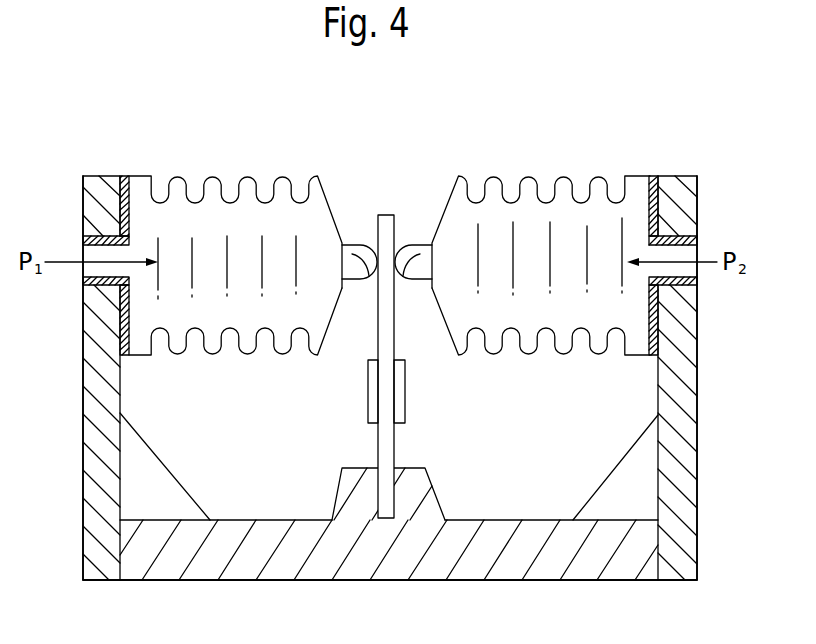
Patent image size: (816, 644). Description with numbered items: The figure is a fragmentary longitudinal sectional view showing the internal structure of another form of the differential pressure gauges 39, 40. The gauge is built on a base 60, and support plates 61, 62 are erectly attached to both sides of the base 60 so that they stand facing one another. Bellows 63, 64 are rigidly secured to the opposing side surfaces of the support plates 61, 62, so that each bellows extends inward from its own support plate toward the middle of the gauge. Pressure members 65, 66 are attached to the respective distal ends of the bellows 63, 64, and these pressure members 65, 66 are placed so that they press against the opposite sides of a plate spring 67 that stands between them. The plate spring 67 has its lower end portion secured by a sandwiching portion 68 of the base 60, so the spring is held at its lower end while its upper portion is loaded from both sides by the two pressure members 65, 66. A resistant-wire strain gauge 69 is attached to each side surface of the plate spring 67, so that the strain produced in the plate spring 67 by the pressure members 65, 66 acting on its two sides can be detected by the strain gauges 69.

The differential pressure gauge 39 is at (636, 145).
The differential pressure gauge 40 is at (390, 378).
The base 60 is at (493, 532).
The support plate 61 is at (95, 387).
The support plate 62 is at (688, 403).
The bellows 63 is at (220, 178).
The bellows 64 is at (537, 178).
The pressure member 65 is at (363, 244).
The pressure member 66 is at (408, 244).
The plate spring 67 is at (387, 338).
The sandwiching portion 68 is at (380, 482).
The resistant-wire strain gauge 69 is at (368, 383).